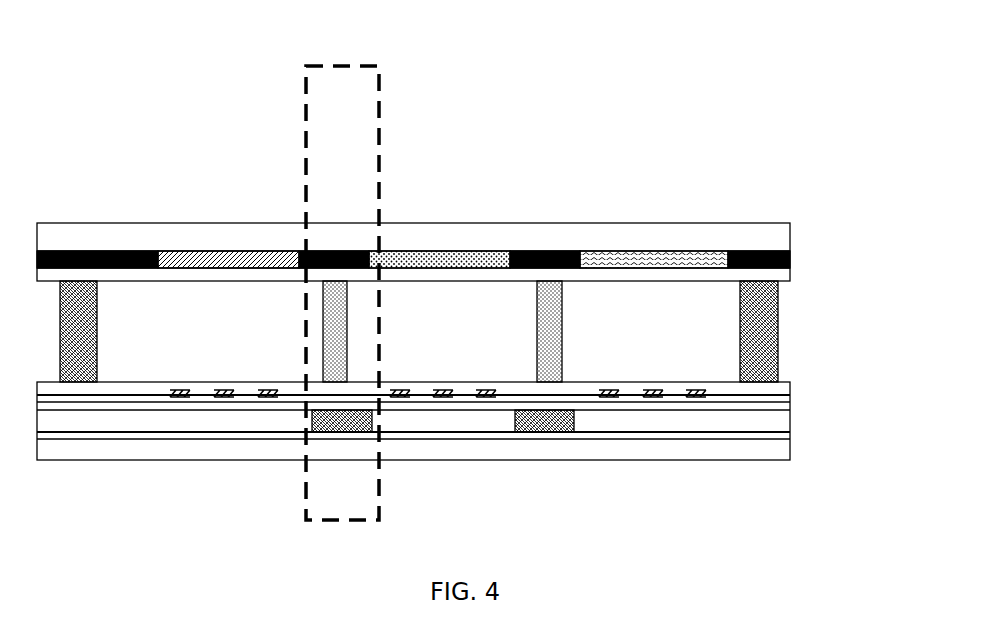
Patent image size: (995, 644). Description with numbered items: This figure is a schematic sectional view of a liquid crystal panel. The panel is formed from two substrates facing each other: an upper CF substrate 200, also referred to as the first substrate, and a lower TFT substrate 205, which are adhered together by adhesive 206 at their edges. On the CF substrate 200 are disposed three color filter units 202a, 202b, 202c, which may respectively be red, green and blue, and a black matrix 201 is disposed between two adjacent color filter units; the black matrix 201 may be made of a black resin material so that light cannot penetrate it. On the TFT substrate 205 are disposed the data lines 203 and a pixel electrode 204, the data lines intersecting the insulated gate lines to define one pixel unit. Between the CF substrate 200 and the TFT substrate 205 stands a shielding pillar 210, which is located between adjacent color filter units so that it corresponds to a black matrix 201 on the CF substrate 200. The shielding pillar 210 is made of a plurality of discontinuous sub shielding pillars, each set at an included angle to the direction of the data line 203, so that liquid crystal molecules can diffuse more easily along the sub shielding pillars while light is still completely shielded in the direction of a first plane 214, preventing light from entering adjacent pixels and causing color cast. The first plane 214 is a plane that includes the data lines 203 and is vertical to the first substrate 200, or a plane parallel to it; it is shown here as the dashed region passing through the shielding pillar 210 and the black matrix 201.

The CF substrate 200 is at (758, 240).
The black matrix 201 is at (352, 262).
The color filter unit 202a is at (243, 262).
The color filter unit 202b is at (470, 262).
The color filter unit 202c is at (652, 262).
The data line 203 is at (338, 425).
The pixel electrode 204 is at (173, 398).
The TFT substrate 205 is at (776, 453).
The adhesive 206 is at (760, 335).
The shielding pillar 210 is at (557, 355).
The first plane 214 is at (380, 80).